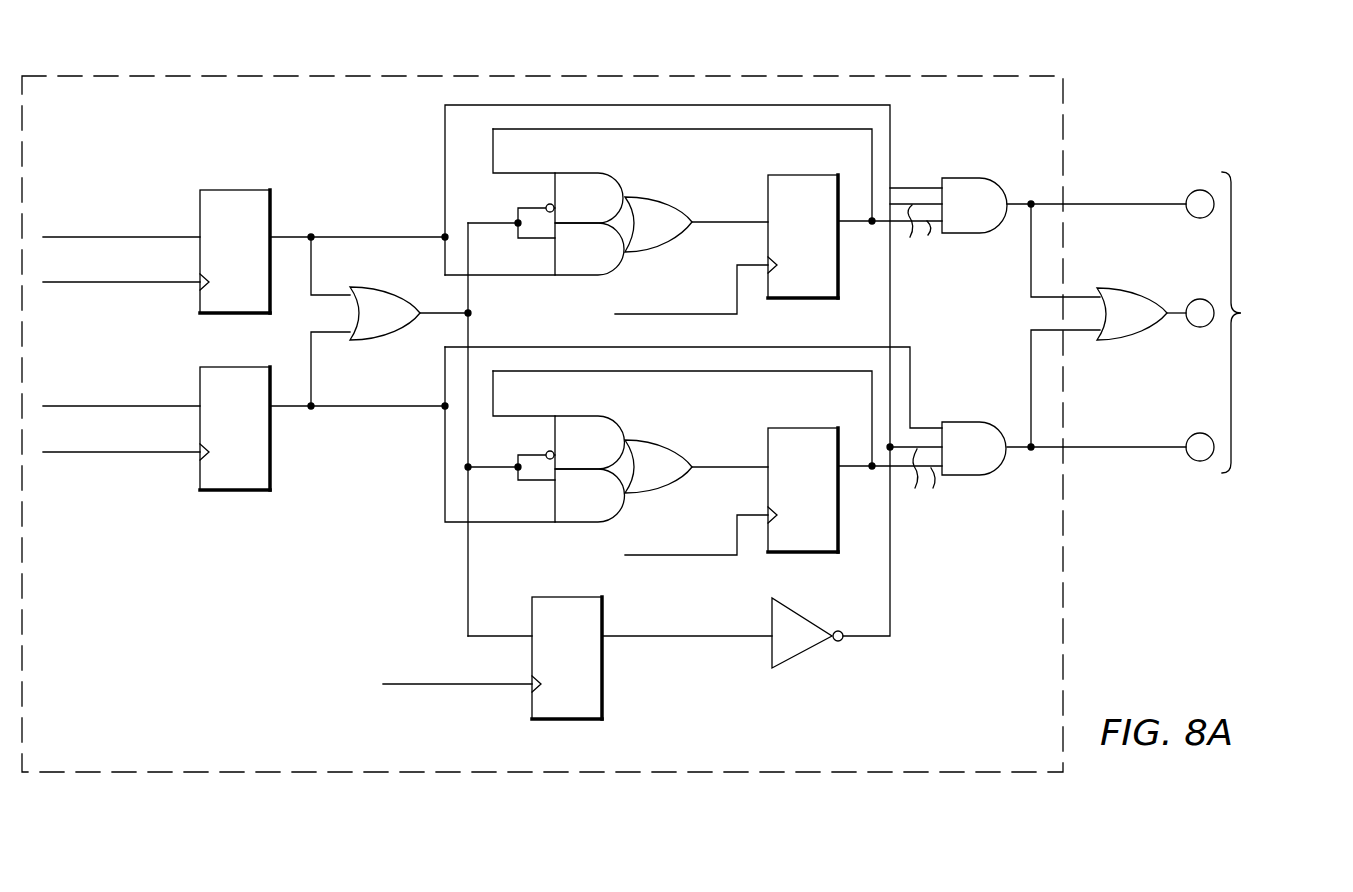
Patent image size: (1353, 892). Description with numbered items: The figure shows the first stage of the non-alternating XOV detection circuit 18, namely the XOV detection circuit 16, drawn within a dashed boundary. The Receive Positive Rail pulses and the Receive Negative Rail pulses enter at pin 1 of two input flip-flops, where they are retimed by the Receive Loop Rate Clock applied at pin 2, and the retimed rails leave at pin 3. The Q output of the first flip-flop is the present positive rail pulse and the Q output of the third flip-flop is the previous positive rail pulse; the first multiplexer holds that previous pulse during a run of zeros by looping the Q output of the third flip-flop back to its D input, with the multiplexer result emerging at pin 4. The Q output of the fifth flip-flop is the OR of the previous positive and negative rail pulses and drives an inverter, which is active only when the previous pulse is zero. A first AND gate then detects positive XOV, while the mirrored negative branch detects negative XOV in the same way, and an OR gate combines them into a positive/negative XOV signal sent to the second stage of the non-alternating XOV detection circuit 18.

The XOV detection circuit 16 is at (722, 764).
The non-alternating XOV detection circuit 18 is at (1128, 603).
The input pin 1 is at (121, 223).
The input pin 2 is at (121, 268).
The output pin 3 is at (359, 224).
The output pin 4 is at (730, 209).